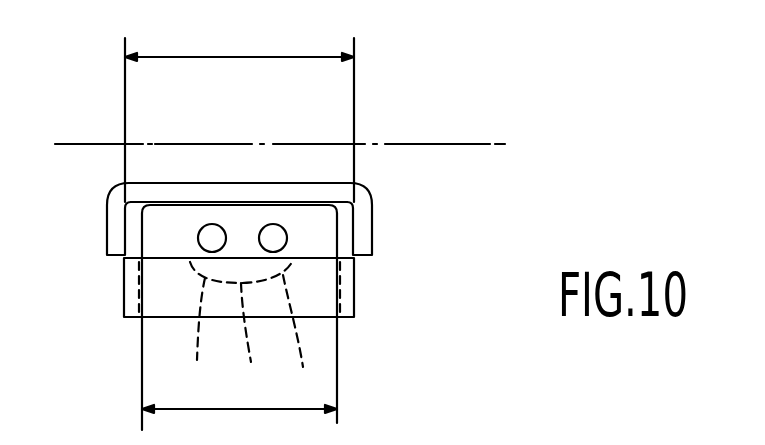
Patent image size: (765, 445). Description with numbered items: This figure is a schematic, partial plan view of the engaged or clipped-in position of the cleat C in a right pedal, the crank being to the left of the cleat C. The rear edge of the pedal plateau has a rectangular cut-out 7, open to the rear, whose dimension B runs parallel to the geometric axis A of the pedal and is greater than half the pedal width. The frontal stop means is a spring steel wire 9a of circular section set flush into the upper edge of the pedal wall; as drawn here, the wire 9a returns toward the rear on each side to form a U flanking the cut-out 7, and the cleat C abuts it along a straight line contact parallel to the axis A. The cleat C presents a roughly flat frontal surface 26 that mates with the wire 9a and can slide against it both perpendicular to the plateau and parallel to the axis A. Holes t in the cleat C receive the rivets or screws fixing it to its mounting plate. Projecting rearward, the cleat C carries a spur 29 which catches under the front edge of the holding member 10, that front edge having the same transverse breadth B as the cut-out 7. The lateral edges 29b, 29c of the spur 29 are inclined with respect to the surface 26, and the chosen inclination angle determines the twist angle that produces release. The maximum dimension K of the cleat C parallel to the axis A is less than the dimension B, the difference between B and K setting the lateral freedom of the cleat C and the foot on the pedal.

The rectangular cut-out 7 is at (345, 230).
The spring steel wire 9a is at (267, 193).
The frontal surface 26 is at (167, 203).
The holes t is at (213, 238).
The holding member 10 is at (167, 316).
The spur 29 is at (241, 328).
The lateral edge of the spur 29b is at (194, 336).
The lateral edge of the spur 29c is at (316, 335).
The dimension B is at (255, 57).
The maximum dimension K is at (237, 410).
The geometric axis A is at (453, 144).
The cleat C is at (140, 235).